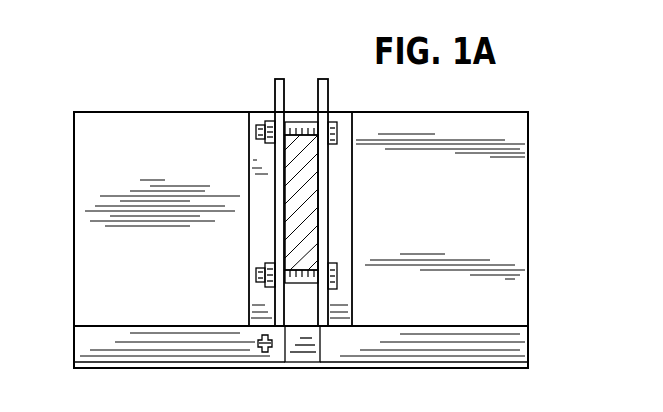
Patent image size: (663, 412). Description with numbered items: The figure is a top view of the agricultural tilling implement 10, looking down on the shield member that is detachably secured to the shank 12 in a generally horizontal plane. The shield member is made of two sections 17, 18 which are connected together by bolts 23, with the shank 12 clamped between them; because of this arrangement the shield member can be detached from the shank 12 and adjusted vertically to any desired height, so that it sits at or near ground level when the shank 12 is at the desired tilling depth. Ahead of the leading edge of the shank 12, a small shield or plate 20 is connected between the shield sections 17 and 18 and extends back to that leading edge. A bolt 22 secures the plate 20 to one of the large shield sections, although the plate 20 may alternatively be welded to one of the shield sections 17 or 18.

The agricultural tilling implement 10 is at (548, 174).
The shank 12 is at (296, 156).
The shield section 17 is at (511, 252).
The shield section 18 is at (95, 210).
The plate 20 is at (301, 355).
The bolt 22 is at (267, 353).
The bolts 23 is at (334, 140).